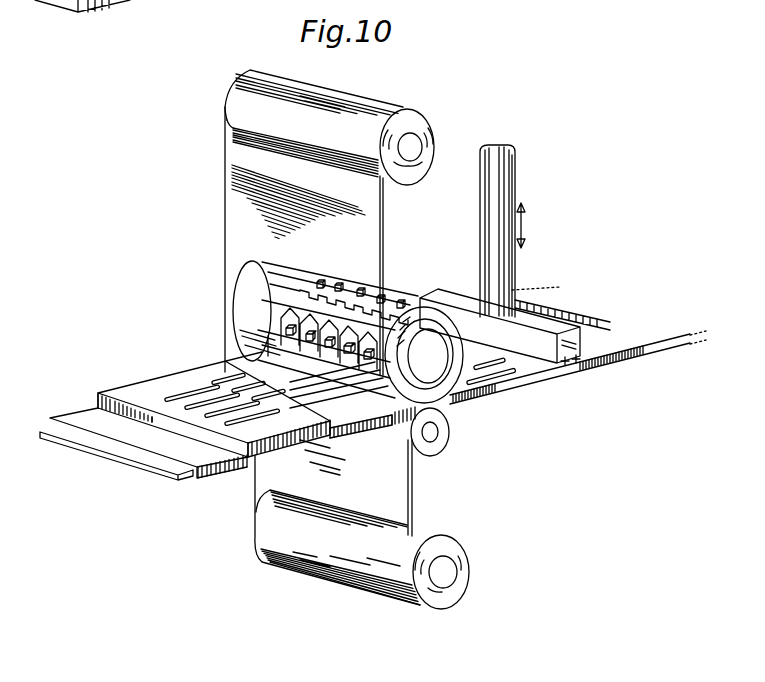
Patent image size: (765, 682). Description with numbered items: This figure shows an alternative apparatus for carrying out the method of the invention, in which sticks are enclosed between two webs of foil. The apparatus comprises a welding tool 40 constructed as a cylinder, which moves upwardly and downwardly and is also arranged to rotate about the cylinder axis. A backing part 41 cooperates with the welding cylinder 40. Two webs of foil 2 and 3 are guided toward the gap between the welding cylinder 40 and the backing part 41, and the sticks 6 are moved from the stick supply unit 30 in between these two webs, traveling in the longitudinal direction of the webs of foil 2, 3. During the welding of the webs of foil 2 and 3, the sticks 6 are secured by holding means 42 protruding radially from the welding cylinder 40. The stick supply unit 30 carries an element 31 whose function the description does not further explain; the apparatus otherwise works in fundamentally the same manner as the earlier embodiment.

The web of foil 2 is at (372, 230).
The web of foil 3 is at (407, 512).
The sticks 6 is at (383, 420).
The stick supply unit 30 is at (185, 450).
The slots of tray 31 is at (258, 388).
The welding tool 40 is at (433, 365).
The backing part 41 is at (433, 434).
The holding means 42 is at (242, 320).